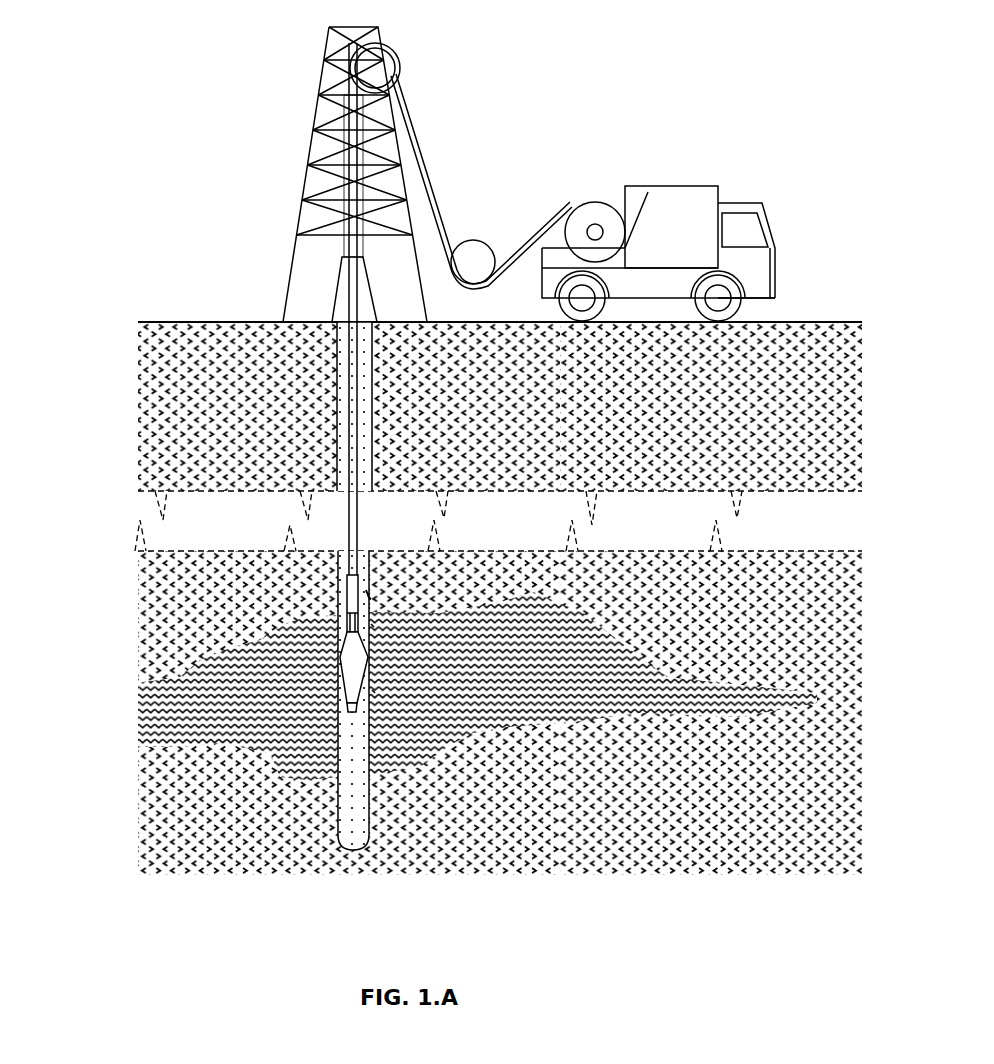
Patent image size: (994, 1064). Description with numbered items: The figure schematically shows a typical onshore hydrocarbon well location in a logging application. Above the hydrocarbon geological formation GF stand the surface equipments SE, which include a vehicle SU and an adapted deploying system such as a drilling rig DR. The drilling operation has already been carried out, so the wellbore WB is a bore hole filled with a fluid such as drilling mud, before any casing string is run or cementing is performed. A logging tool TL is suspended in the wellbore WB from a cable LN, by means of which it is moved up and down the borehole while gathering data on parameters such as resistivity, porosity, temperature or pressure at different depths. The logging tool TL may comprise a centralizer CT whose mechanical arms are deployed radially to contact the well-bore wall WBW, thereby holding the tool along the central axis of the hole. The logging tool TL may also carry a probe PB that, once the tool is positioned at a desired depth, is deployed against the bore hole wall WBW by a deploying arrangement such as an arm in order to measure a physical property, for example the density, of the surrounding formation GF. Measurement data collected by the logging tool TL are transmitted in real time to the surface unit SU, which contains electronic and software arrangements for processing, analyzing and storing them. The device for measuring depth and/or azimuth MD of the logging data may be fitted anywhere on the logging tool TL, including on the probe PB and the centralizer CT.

The drilling rig DR is at (317, 117).
The surface equipment SE is at (484, 98).
The vehicle (surface unit) SU is at (648, 192).
The cable LN is at (348, 272).
The wellbore WB is at (342, 355).
The well-bore wall WBW is at (338, 413).
The logging tool TL is at (345, 600).
The centralizer CT is at (338, 645).
The hydrocarbon geological formation GF is at (153, 702).
The probe PB is at (371, 594).
The device for measuring depth and/or azimuth MD is at (369, 597).